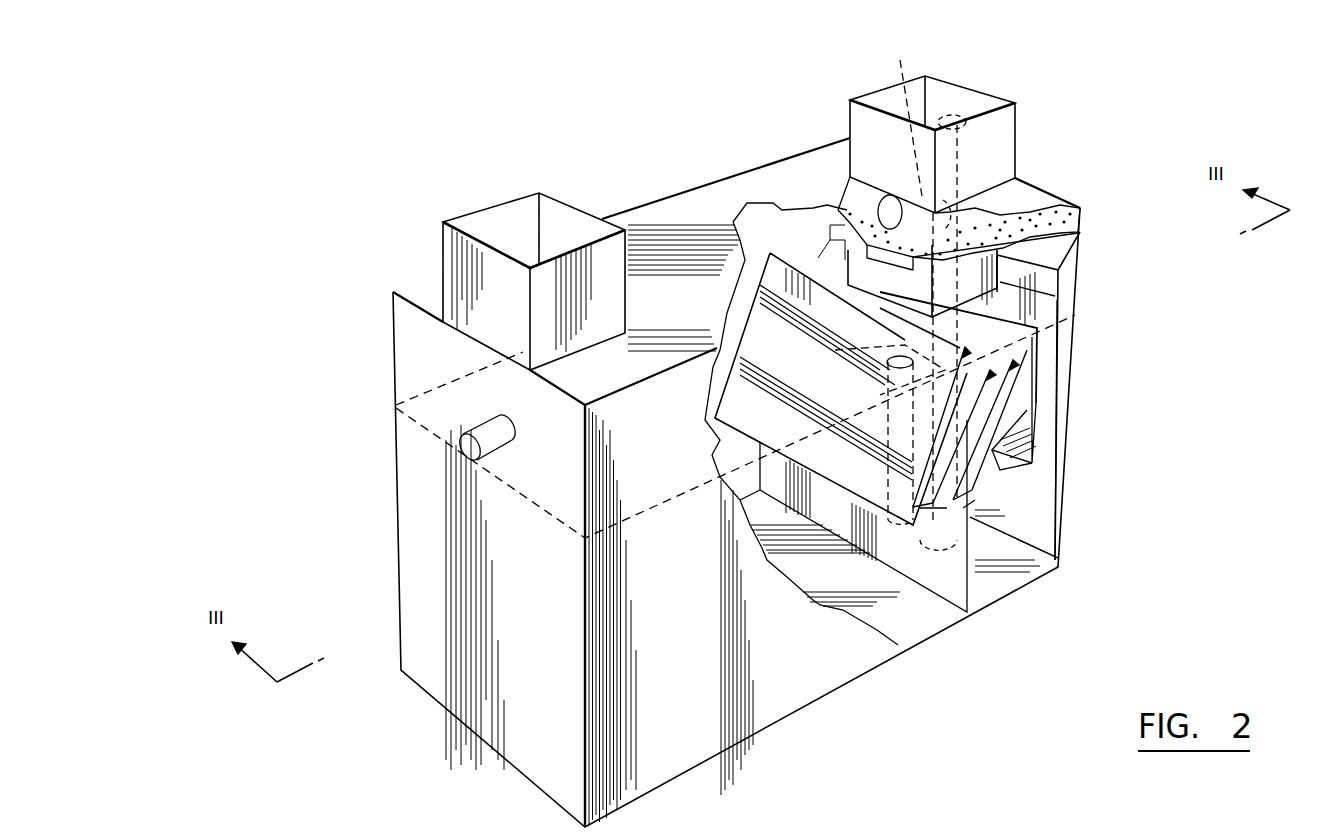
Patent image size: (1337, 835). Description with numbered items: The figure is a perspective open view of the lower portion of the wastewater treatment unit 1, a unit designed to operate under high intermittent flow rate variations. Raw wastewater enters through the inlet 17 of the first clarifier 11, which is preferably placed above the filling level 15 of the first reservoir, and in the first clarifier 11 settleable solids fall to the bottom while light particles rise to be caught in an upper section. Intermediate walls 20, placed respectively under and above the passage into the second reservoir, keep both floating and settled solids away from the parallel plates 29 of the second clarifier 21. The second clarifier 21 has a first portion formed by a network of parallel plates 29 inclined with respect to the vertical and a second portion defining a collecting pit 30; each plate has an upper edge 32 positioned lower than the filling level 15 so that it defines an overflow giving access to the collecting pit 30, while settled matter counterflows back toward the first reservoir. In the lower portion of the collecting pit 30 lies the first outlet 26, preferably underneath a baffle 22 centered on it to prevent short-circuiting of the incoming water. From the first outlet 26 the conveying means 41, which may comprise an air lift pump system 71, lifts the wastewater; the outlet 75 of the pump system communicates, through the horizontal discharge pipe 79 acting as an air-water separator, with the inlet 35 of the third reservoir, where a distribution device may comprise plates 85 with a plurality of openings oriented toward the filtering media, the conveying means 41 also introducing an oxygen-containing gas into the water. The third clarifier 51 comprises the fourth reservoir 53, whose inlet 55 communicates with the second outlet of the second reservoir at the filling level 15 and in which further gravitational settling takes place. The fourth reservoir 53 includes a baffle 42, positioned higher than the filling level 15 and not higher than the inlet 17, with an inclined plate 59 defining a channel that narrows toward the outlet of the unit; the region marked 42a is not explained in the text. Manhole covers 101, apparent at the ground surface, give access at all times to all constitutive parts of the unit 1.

The wastewater treatment unit 1 is at (346, 339).
The first clarifier 11 is at (913, 607).
The filling level 15 is at (398, 410).
The inlet 17 is at (490, 463).
The intermediate walls 20 is at (960, 583).
The second clarifier 21 is at (822, 223).
The baffle 22 is at (890, 377).
The first outlet 26 is at (866, 372).
The parallel plates 29 is at (958, 492).
The collecting pit 30 is at (1032, 422).
The upper edge 32 is at (1045, 380).
The inlet 35 is at (886, 215).
The conveying means 41 is at (957, 186).
The baffle 42 is at (1064, 262).
The wall ledge 42a is at (1060, 290).
The third clarifier 51 is at (1036, 568).
The fourth reservoir 53 is at (1036, 518).
The inlet 55 is at (1042, 331).
The plate 59 is at (1040, 447).
The air lift pump system 71 is at (957, 157).
The outlet 75 is at (900, 198).
The horizontal discharge pipe 79 is at (922, 197).
The plates 85 is at (1080, 222).
The manhole covers 101 is at (490, 230).